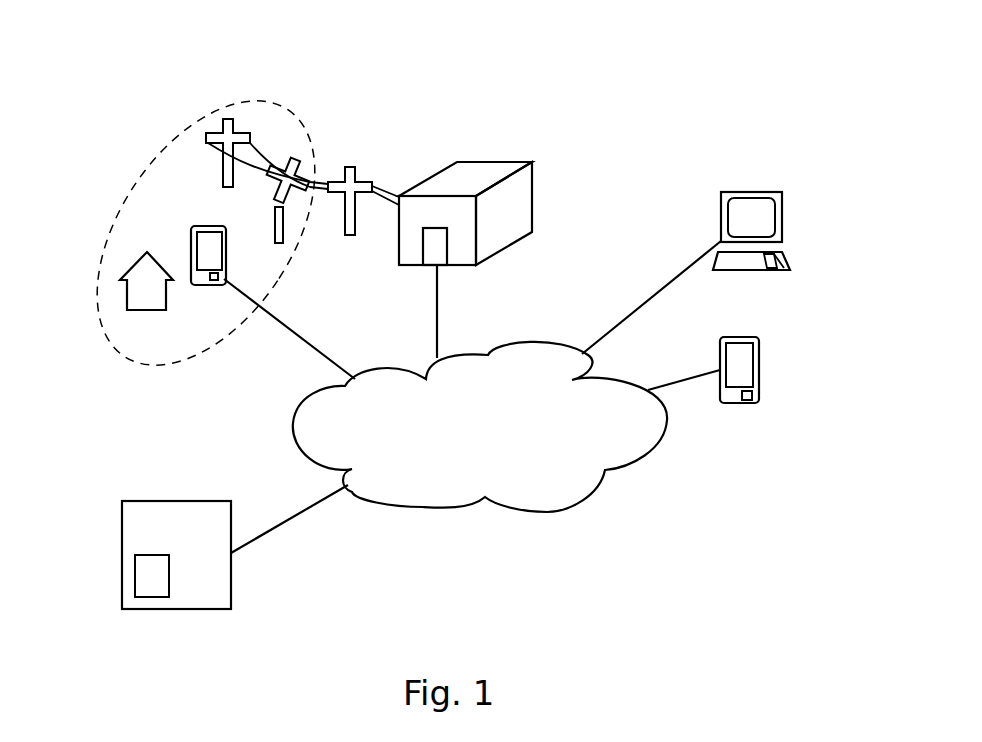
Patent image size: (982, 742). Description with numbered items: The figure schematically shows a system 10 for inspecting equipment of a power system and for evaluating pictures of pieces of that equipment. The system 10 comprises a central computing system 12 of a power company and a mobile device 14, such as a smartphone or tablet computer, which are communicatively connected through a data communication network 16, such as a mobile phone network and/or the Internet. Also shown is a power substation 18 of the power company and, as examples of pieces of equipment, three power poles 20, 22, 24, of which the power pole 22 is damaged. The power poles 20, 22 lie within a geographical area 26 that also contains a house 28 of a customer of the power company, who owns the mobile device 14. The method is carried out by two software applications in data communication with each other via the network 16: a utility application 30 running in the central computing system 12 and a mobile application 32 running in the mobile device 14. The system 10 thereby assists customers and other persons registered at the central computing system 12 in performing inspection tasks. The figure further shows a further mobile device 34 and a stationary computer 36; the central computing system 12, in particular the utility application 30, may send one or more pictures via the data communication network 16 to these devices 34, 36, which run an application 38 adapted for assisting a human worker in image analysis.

The system 10 is at (660, 100).
The central computing system 12 is at (139, 600).
The mobile device 14 is at (165, 272).
The data communication network 16 is at (528, 512).
The power substation 18 is at (490, 162).
The power pole 20 is at (201, 205).
The power pole 22 is at (303, 103).
The power pole 24 is at (364, 155).
The geographical area 26 is at (112, 223).
The house 28 is at (127, 295).
The utility application 30 is at (135, 575).
The mobile application 32 is at (214, 287).
The further mobile device 34 is at (650, 253).
The stationary computer 36 is at (783, 210).
The application 38 is at (786, 258).